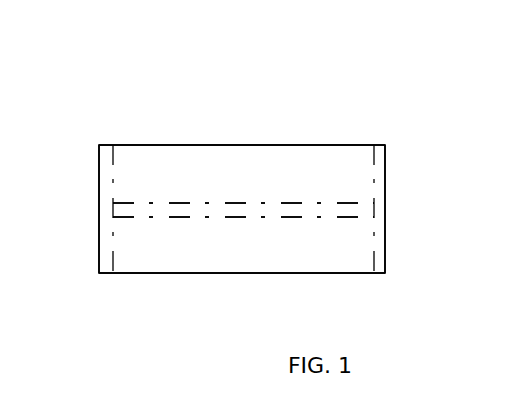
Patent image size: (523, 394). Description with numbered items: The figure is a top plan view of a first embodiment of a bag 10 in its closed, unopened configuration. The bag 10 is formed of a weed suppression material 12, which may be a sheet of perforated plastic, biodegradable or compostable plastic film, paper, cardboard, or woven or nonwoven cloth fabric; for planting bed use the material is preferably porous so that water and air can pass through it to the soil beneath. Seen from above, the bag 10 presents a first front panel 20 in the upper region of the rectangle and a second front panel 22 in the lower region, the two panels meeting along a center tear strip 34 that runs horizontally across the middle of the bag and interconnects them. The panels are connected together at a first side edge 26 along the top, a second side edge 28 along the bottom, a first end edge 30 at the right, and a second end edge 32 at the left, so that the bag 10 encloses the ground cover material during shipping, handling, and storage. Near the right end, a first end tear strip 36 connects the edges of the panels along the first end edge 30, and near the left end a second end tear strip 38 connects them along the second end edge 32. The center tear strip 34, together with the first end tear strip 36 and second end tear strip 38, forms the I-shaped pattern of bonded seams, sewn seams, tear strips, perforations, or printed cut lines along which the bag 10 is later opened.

The bag 10 is at (398, 91).
The weed suppression material 12 is at (139, 145).
The first front panel 20 is at (208, 174).
The second front panel 22 is at (182, 250).
The first side edge 26 is at (285, 145).
The second side edge 28 is at (253, 273).
The first end edge 30 is at (386, 175).
The second end edge 32 is at (98, 168).
The center tear strip 34 is at (303, 209).
The first end tear strip 36 is at (377, 240).
The second end tear strip 38 is at (105, 243).